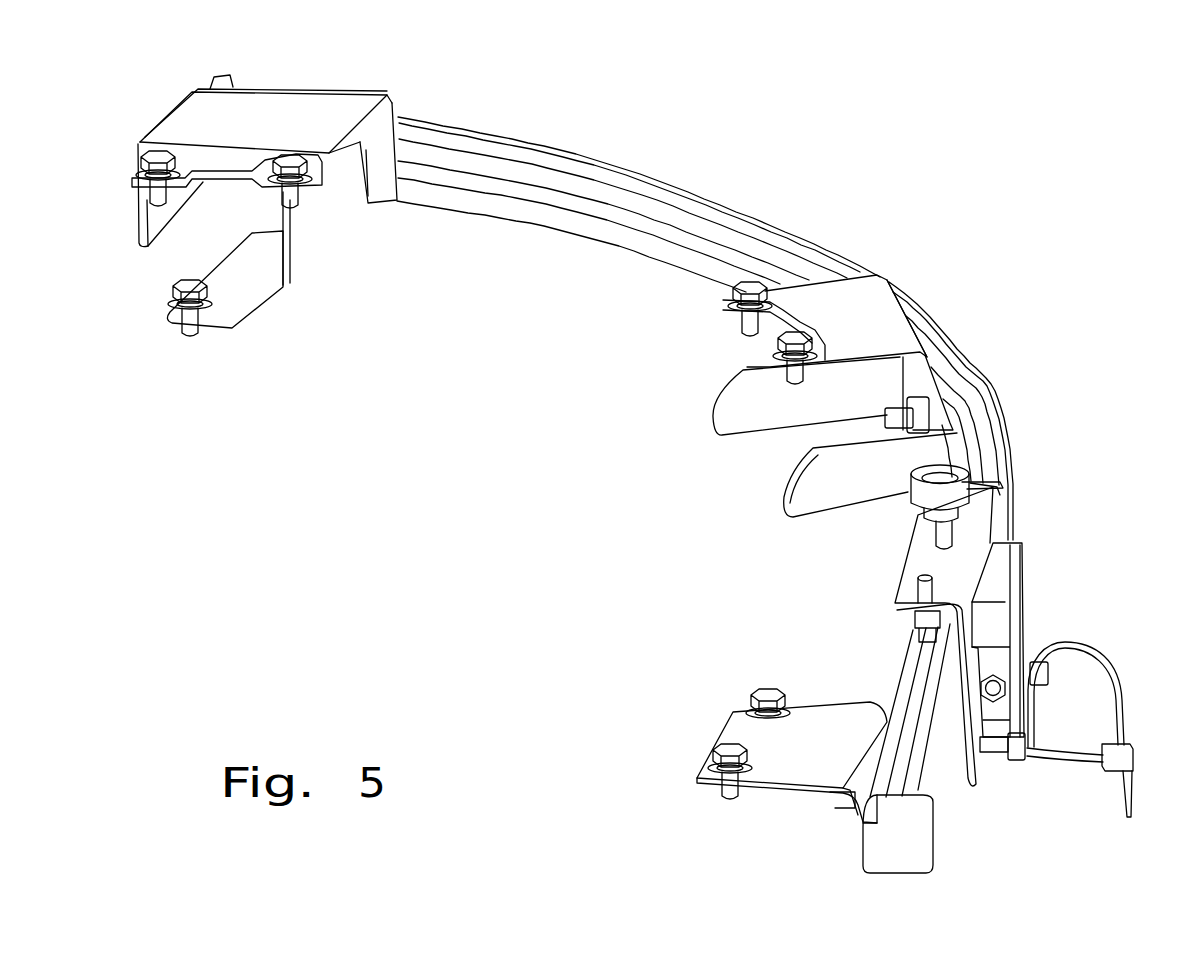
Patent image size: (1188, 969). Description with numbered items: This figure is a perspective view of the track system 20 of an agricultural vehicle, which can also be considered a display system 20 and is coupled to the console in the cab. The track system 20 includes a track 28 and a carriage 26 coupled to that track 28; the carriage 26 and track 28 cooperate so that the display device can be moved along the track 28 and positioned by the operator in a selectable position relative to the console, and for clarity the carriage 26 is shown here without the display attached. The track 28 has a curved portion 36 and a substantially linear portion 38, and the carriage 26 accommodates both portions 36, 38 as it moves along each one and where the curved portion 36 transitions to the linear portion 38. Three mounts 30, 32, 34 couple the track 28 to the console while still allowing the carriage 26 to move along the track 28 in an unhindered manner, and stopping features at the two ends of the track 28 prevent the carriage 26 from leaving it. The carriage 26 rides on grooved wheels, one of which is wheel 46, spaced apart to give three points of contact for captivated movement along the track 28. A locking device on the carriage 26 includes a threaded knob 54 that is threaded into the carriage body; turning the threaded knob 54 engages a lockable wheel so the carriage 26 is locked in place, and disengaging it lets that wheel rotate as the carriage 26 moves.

The track system 20 is at (478, 488).
The carriage 26 is at (1020, 545).
The track 28 is at (990, 387).
The mount 30 is at (307, 253).
The mount 32 is at (745, 397).
The mount 34 is at (733, 730).
The curved portion 36 is at (642, 148).
The substantially linear portion 38 is at (1040, 505).
The wheel 46 is at (917, 627).
The threaded knob 54 is at (923, 500).